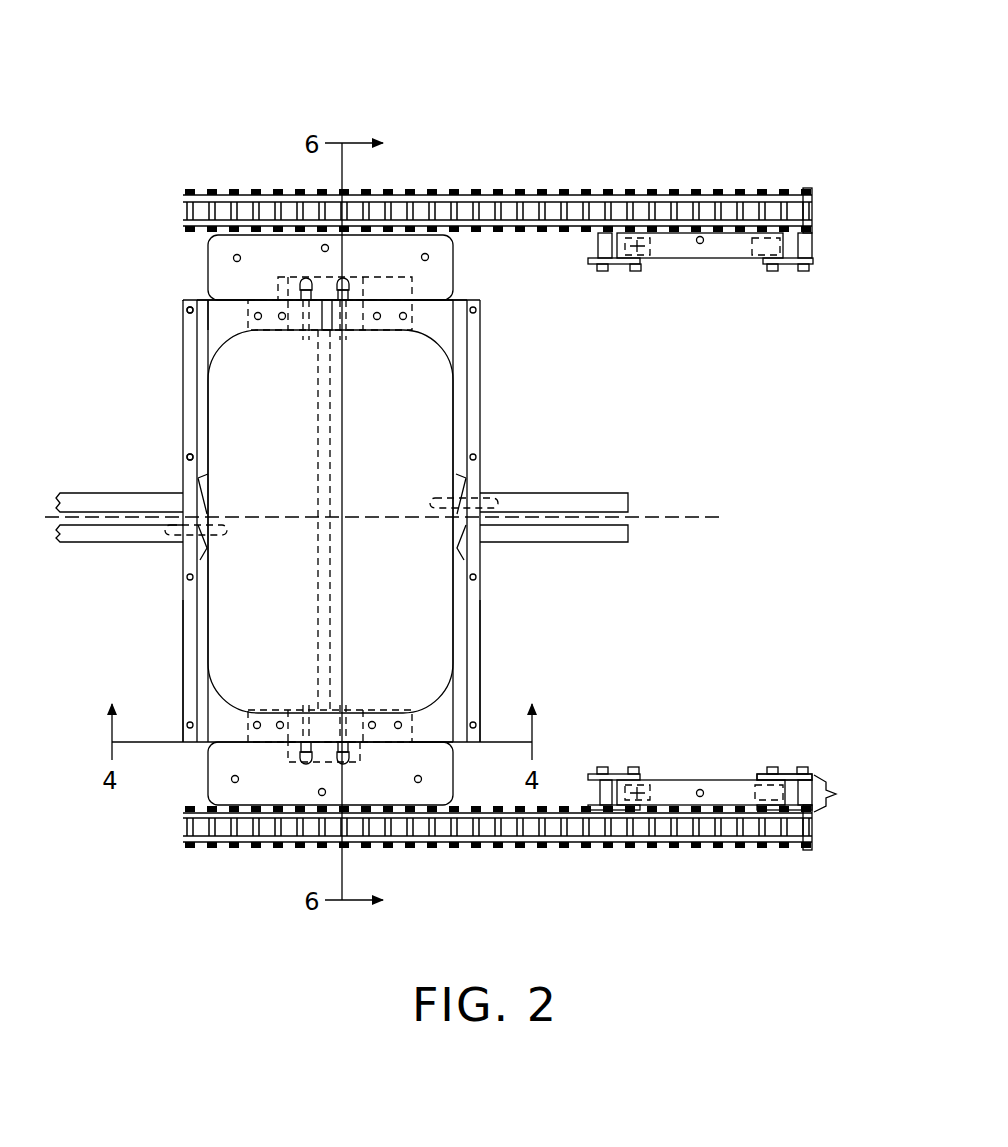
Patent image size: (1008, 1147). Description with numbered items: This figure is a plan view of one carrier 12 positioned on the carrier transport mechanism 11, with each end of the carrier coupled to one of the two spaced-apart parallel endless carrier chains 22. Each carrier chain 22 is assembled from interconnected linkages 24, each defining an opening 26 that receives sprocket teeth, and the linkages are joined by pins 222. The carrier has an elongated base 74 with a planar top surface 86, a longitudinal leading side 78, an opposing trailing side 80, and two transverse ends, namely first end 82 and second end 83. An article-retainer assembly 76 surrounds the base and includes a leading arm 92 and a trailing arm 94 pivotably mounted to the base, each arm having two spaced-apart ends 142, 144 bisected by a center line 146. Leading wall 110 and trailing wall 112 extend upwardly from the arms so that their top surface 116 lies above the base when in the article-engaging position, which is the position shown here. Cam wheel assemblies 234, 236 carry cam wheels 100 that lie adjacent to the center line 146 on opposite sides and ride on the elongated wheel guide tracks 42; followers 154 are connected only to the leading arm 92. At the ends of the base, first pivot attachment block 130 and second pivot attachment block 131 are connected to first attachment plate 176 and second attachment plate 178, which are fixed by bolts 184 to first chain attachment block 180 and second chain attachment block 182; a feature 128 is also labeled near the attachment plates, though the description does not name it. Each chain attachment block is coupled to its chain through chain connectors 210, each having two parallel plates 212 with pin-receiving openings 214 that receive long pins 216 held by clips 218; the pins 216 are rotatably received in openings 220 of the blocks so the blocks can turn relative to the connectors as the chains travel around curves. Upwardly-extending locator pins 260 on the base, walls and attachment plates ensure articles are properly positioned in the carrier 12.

The carrier transport mechanism 11 is at (540, 56).
The carrier 12 is at (108, 252).
The carrier chain 22 is at (712, 165).
The linkage 24 is at (490, 194).
The opening 26 is at (585, 194).
The wheel guide track 42 is at (600, 500).
The base 74 is at (262, 417).
The article-retainer assembly 76 is at (496, 334).
The leading side 78 is at (455, 420).
The trailing side 80 is at (215, 418).
The first end 82 is at (352, 335).
The second end 83 is at (340, 700).
The top surface 86 is at (258, 620).
The leading arm 92 is at (470, 310).
The trailing arm 94 is at (222, 306).
The cam wheel 100 is at (165, 532).
The leading wall 110 is at (478, 660).
The trailing wall 112 is at (190, 655).
The top surface 116 is at (189, 393).
The mounting hole 128 is at (305, 280).
The first pivot attachment block 130 is at (450, 282).
The second pivot attachment block 131 is at (455, 760).
The first end 142 is at (258, 300).
The second end 144 is at (212, 745).
The center line 146 is at (690, 517).
The follower 154 is at (340, 283).
The first attachment plate 176 is at (225, 238).
The second attachment plate 178 is at (222, 788).
The first chain attachment block 180 is at (735, 240).
The second chain attachment block 182 is at (660, 782).
The bolt 184 is at (265, 200).
The chain connector 210 is at (820, 786).
The plate 212 is at (848, 793).
The pin-receiving opening 214 is at (773, 767).
The pin 216 is at (630, 194).
The clip 218 is at (605, 767).
The opening 220 is at (637, 262).
The pin 222 is at (665, 194).
The cam wheel assembly 234 is at (487, 473).
The cam wheel assembly 236 is at (170, 571).
The locator pin 260 is at (222, 265).